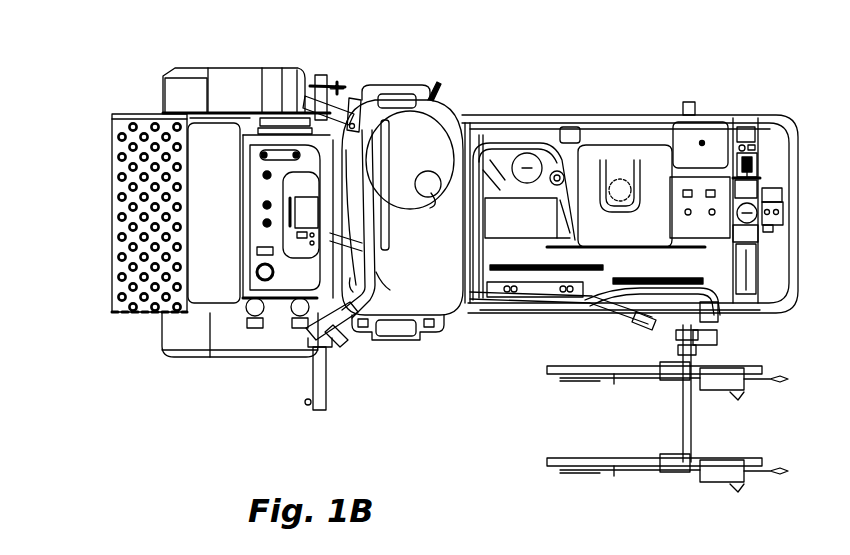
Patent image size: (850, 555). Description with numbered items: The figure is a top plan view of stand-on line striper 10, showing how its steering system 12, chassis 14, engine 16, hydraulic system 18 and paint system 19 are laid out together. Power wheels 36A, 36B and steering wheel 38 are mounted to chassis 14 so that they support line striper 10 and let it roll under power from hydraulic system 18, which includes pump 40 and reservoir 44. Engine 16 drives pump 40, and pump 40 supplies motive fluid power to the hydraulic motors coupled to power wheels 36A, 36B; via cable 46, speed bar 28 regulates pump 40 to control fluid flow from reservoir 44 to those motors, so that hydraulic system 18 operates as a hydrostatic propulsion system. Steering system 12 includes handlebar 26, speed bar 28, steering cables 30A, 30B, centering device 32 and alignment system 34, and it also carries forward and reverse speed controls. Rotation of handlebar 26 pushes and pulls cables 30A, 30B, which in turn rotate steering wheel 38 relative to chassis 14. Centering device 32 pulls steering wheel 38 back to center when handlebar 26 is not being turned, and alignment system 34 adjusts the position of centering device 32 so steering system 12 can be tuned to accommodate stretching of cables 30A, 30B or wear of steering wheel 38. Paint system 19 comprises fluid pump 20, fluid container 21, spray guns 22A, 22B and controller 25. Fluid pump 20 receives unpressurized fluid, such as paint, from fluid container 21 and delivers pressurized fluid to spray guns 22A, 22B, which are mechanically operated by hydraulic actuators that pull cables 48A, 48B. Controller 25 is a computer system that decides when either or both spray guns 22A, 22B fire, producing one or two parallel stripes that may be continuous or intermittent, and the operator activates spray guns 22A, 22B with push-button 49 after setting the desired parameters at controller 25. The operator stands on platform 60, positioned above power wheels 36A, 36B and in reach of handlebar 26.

The stand-on line striper 10 is at (462, 80).
The steering system 12 is at (386, 258).
The chassis 14 is at (503, 114).
The engine 16 is at (674, 160).
The hydraulic system 18 is at (542, 135).
The paint system 19 is at (348, 335).
The fluid pump 20 is at (296, 352).
The fluid container 21 is at (446, 266).
The spray gun 22A is at (718, 392).
The spray gun 22B is at (724, 484).
The controller 25 is at (290, 215).
The handlebar 26 is at (380, 278).
The speed bar 28 is at (377, 299).
The steering cable 30A is at (393, 237).
The steering cable 30B is at (362, 178).
The centering device 32 is at (768, 194).
The alignment system 34 is at (760, 170).
The power wheel 36A is at (300, 360).
The power wheel 36B is at (290, 72).
The steering wheel 38 is at (783, 221).
The pump 40 is at (664, 334).
The reservoir 44 is at (580, 190).
The cable 46 is at (342, 279).
The cable 48A is at (640, 380).
The cable 48B is at (642, 474).
The push-button 49 is at (357, 98).
The platform 60 is at (110, 213).